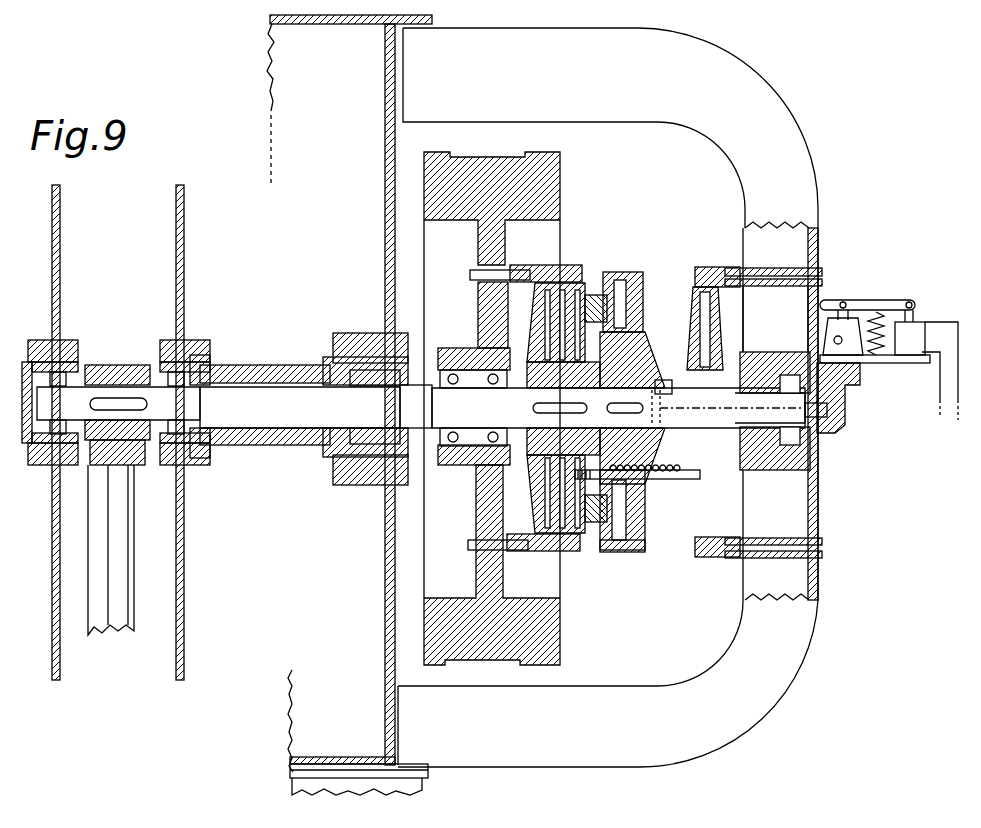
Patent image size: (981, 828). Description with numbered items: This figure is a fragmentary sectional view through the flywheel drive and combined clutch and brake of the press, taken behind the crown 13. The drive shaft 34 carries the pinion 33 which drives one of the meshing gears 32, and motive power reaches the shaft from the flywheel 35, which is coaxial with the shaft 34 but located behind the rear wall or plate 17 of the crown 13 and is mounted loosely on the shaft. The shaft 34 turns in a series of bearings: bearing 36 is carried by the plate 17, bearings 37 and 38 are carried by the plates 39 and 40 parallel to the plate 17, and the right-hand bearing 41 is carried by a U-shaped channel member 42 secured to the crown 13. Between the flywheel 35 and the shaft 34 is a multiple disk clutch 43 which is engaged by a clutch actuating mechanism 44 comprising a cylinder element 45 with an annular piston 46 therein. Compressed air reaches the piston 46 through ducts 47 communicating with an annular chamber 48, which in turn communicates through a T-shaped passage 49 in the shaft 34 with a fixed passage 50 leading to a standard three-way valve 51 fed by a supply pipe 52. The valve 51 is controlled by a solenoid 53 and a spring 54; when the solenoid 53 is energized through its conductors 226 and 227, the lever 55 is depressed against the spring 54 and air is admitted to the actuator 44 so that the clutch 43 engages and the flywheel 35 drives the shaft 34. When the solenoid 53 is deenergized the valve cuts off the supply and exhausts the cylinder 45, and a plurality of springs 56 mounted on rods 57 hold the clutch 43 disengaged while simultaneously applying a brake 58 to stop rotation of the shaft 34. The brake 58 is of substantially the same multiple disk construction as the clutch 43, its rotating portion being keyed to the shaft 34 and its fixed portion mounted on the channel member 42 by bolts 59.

The crown 13 is at (290, 712).
The rear wall 17 is at (385, 580).
The gear 32 is at (135, 522).
The pinion 33 is at (115, 366).
The shaft 34 is at (268, 415).
The flywheel 35 is at (497, 160).
The bearing 36 is at (350, 333).
The bearing 37 is at (197, 340).
The bearing 38 is at (72, 340).
The plate 39 is at (184, 600).
The plate 40 is at (52, 594).
The bearing 41 is at (765, 485).
The U-shaped channel member 42 is at (672, 700).
The clutch 43 is at (585, 285).
The clutch actuating mechanism 44 is at (615, 273).
The cylinder element 45 is at (640, 538).
The annular piston 46 is at (611, 550).
The ducts 47 is at (650, 372).
The annular chamber 48 is at (664, 380).
The T-shaped passage 49 is at (755, 470).
The fixed passage 50 is at (850, 405).
The three-way valve 51 is at (855, 325).
The supply pipe 52 is at (845, 345).
The solenoid 53 is at (915, 330).
The spring 54 is at (882, 330).
The lever 55 is at (855, 300).
The springs 56 is at (662, 470).
The rods 57 is at (658, 482).
The brake 58 is at (690, 292).
The bolts 59 is at (780, 268).
The conductor 226 is at (958, 420).
The conductor 227 is at (940, 400).